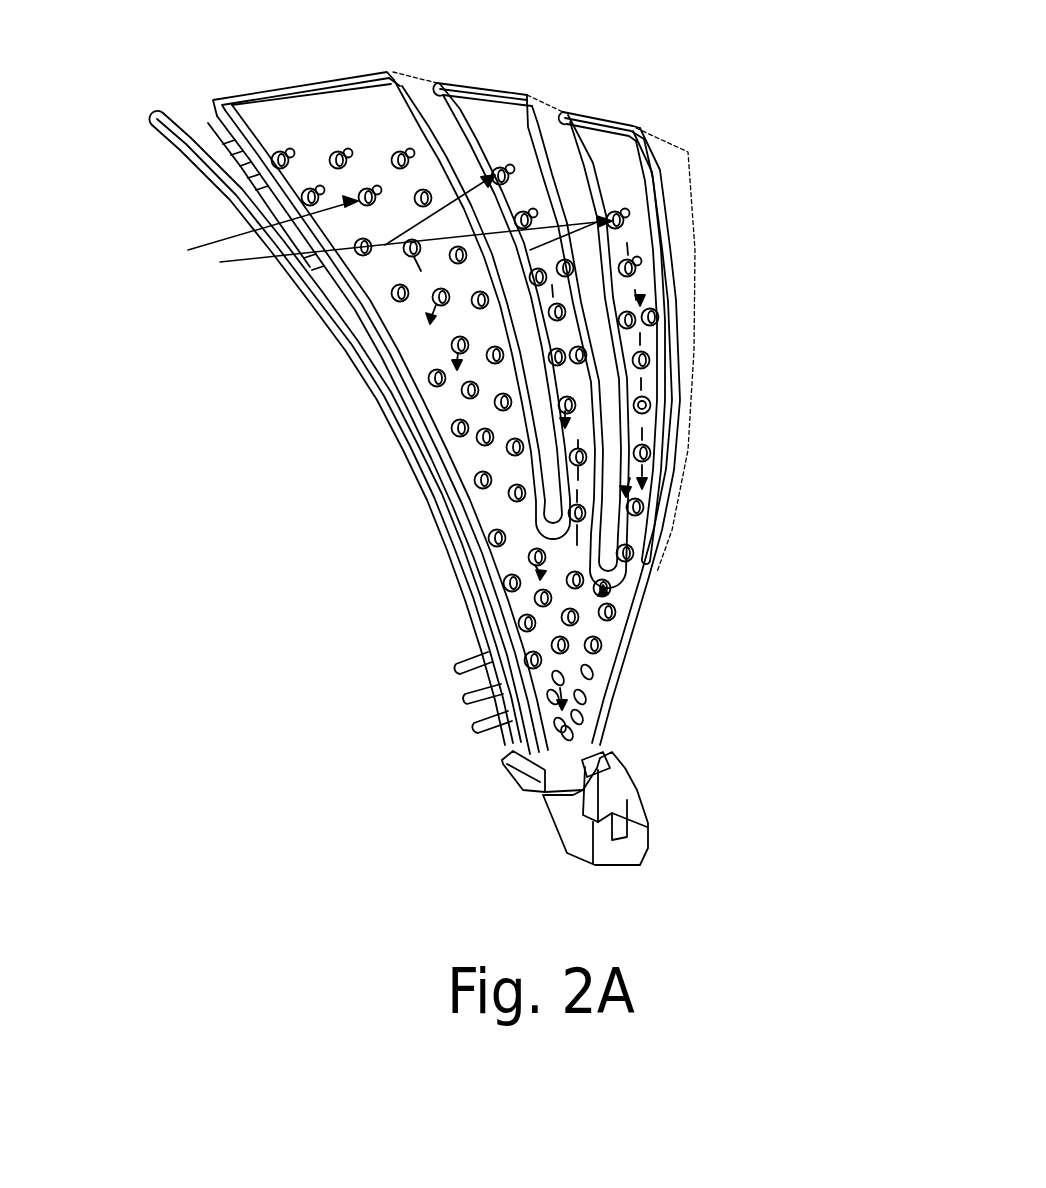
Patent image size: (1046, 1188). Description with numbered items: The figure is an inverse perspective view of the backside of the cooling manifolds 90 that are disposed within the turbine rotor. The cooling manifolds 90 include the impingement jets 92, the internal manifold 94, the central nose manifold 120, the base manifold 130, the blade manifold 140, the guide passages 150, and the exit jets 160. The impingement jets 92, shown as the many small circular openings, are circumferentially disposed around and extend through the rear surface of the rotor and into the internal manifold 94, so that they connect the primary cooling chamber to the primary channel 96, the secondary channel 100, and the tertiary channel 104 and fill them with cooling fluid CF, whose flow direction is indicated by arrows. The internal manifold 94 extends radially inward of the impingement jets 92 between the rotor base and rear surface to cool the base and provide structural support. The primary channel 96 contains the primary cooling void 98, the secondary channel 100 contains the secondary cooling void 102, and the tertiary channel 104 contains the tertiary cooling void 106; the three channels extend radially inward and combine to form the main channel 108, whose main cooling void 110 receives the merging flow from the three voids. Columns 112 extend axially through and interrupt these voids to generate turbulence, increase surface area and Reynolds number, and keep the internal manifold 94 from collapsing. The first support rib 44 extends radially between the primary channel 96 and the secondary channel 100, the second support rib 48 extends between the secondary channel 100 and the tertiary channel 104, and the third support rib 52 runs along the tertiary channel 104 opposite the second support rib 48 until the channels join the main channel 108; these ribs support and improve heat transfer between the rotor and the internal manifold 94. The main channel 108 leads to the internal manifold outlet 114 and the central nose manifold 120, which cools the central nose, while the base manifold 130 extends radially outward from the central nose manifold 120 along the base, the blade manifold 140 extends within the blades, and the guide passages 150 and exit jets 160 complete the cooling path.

The cooling manifolds 90 is at (700, 130).
The first support rib 44 is at (427, 80).
The second support rib 48 is at (555, 117).
The third support rib 52 is at (680, 200).
The impingement jets 92 is at (337, 147).
The internal manifold 94 is at (653, 273).
The primary channel 96 is at (393, 265).
The primary cooling void 98 is at (413, 460).
The secondary channel 100 is at (572, 322).
The secondary cooling void 102 is at (583, 375).
The tertiary channel 104 is at (650, 428).
The tertiary cooling void 106 is at (643, 472).
The main channel 108 is at (562, 600).
The main cooling void 110 is at (567, 645).
The columns 112 is at (415, 328).
The internal manifold outlet 114 is at (610, 768).
The central nose manifold 120 is at (612, 813).
The base manifold 130 is at (500, 590).
The blade manifold 140 is at (187, 143).
The guide passages 150 is at (237, 148).
The exit jets 160 is at (495, 721).
The cooling fluid CF is at (240, 236).